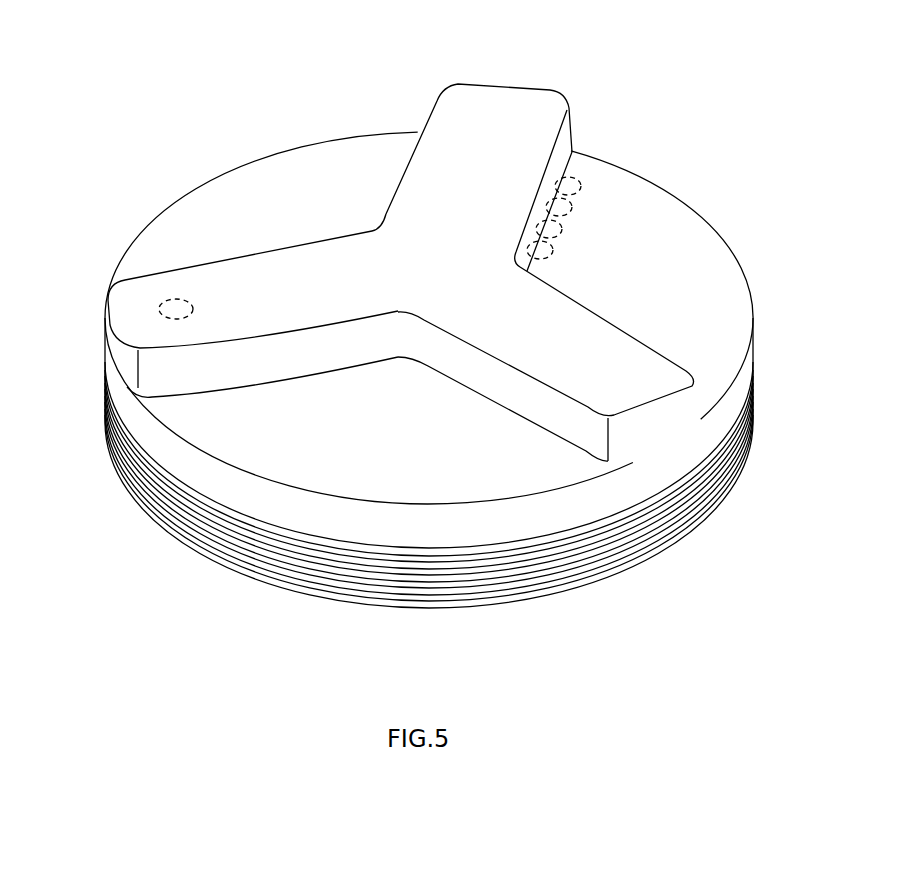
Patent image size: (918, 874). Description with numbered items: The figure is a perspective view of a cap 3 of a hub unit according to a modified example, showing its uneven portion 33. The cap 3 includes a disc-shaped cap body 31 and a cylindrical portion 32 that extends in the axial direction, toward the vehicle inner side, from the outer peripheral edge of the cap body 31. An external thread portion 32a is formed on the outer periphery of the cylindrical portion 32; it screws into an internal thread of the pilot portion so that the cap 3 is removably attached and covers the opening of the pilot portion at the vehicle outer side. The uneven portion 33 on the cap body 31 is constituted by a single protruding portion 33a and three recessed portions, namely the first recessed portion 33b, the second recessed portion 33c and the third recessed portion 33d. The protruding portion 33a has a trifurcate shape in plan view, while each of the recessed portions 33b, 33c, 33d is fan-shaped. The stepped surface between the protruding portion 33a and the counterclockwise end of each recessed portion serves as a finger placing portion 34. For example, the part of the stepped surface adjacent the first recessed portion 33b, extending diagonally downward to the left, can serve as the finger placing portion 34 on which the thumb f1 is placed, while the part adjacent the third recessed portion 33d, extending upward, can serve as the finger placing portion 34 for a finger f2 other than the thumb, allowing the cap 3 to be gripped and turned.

The cap 3 is at (203, 150).
The cap body 31 is at (296, 143).
The cylindrical portion 32 is at (429, 503).
The external thread portion 32a is at (530, 577).
The uneven portion 33 is at (437, 98).
The protruding portion 33a is at (507, 105).
The first recessed portion 33b is at (353, 157).
The second recessed portion 33c is at (230, 438).
The third recessed portion 33d is at (680, 228).
The finger placing portion 34 is at (218, 260).
The thumb f1 is at (165, 296).
The finger f2 is at (567, 232).